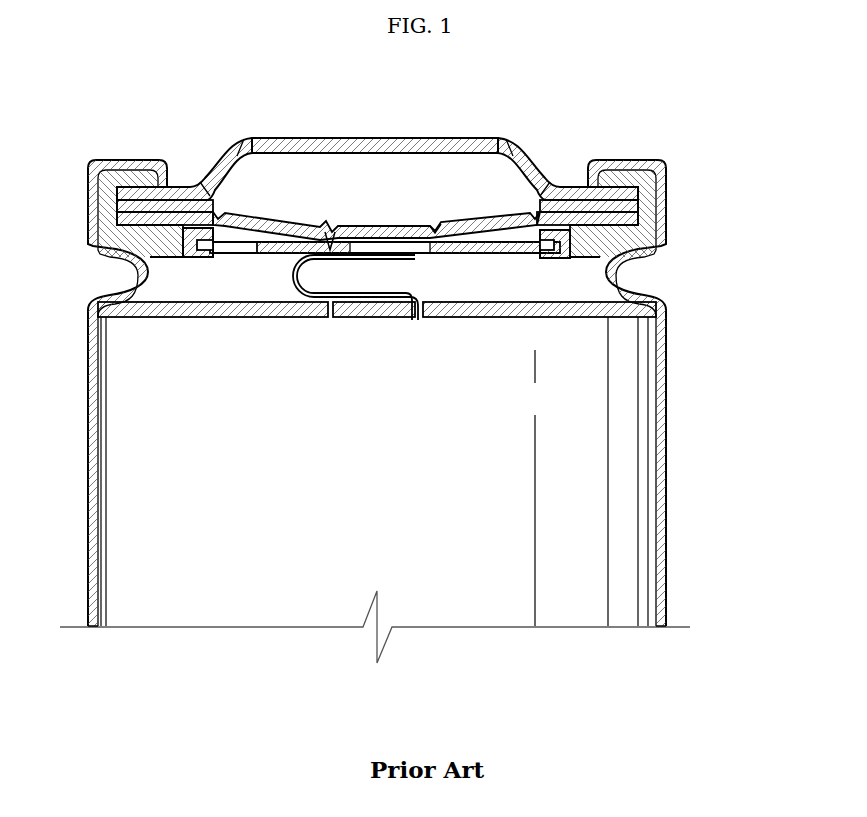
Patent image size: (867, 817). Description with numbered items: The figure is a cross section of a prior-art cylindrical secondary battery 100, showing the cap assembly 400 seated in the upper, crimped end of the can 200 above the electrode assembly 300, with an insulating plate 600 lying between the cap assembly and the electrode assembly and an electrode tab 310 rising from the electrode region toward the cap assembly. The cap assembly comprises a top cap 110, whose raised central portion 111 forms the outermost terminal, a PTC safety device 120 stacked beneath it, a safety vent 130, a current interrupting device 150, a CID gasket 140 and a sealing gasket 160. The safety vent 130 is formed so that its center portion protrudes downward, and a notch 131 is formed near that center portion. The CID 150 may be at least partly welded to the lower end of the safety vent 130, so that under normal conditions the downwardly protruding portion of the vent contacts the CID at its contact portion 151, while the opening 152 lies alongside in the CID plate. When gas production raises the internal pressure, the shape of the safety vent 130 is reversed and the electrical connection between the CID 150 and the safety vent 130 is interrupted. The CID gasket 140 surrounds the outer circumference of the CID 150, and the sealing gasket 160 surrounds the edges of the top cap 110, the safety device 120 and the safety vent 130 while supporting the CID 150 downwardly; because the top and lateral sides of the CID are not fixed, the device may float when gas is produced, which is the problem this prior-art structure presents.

The cylindrical secondary battery 100 is at (209, 99).
The cap-up top portion 111 is at (521, 154).
The top cap 110 is at (638, 183).
The PTC safety device 120 is at (633, 194).
The safety vent 130 is at (633, 207).
The notch 131 is at (437, 228).
The CID gasket 140 is at (633, 219).
The current interrupting device (CID) 150 is at (625, 240).
The cap-down protrusion 151 is at (330, 240).
The cap-down opening 152 is at (238, 246).
The sealing gasket 160 is at (625, 262).
The electrode tab 310 is at (294, 272).
The cap assembly 400 is at (726, 133).
The insulating plate 600 is at (660, 309).
The electrode assembly 300 is at (630, 385).
The can 200 is at (665, 433).